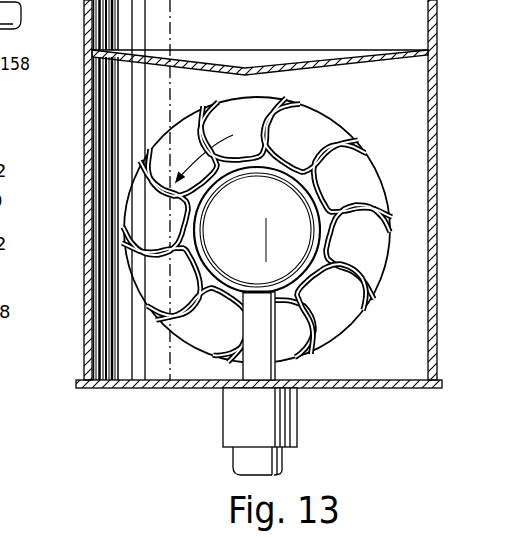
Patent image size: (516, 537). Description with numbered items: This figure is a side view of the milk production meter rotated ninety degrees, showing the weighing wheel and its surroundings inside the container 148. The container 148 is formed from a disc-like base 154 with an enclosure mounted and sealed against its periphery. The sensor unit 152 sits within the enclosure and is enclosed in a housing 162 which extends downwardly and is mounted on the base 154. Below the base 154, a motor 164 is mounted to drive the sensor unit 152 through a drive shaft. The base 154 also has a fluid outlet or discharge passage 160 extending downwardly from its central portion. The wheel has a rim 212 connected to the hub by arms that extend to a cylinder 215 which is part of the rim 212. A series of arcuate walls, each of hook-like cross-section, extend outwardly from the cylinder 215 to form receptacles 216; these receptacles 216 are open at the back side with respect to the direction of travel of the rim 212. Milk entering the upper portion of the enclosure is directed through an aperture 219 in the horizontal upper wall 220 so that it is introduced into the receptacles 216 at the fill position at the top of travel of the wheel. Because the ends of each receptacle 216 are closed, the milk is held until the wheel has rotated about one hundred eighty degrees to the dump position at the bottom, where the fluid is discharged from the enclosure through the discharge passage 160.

The container 148 is at (85, 336).
The sensor unit 152 is at (264, 214).
The base 154 is at (150, 390).
The fluid outlet passage 160 is at (242, 457).
The housing 162 is at (248, 327).
The motor 164 is at (265, 426).
The rim 212 is at (347, 186).
The cylinder 215 is at (313, 279).
The receptacles 216 is at (296, 102).
The aperture 219 is at (258, 72).
The horizontal upper wall 220 is at (343, 69).